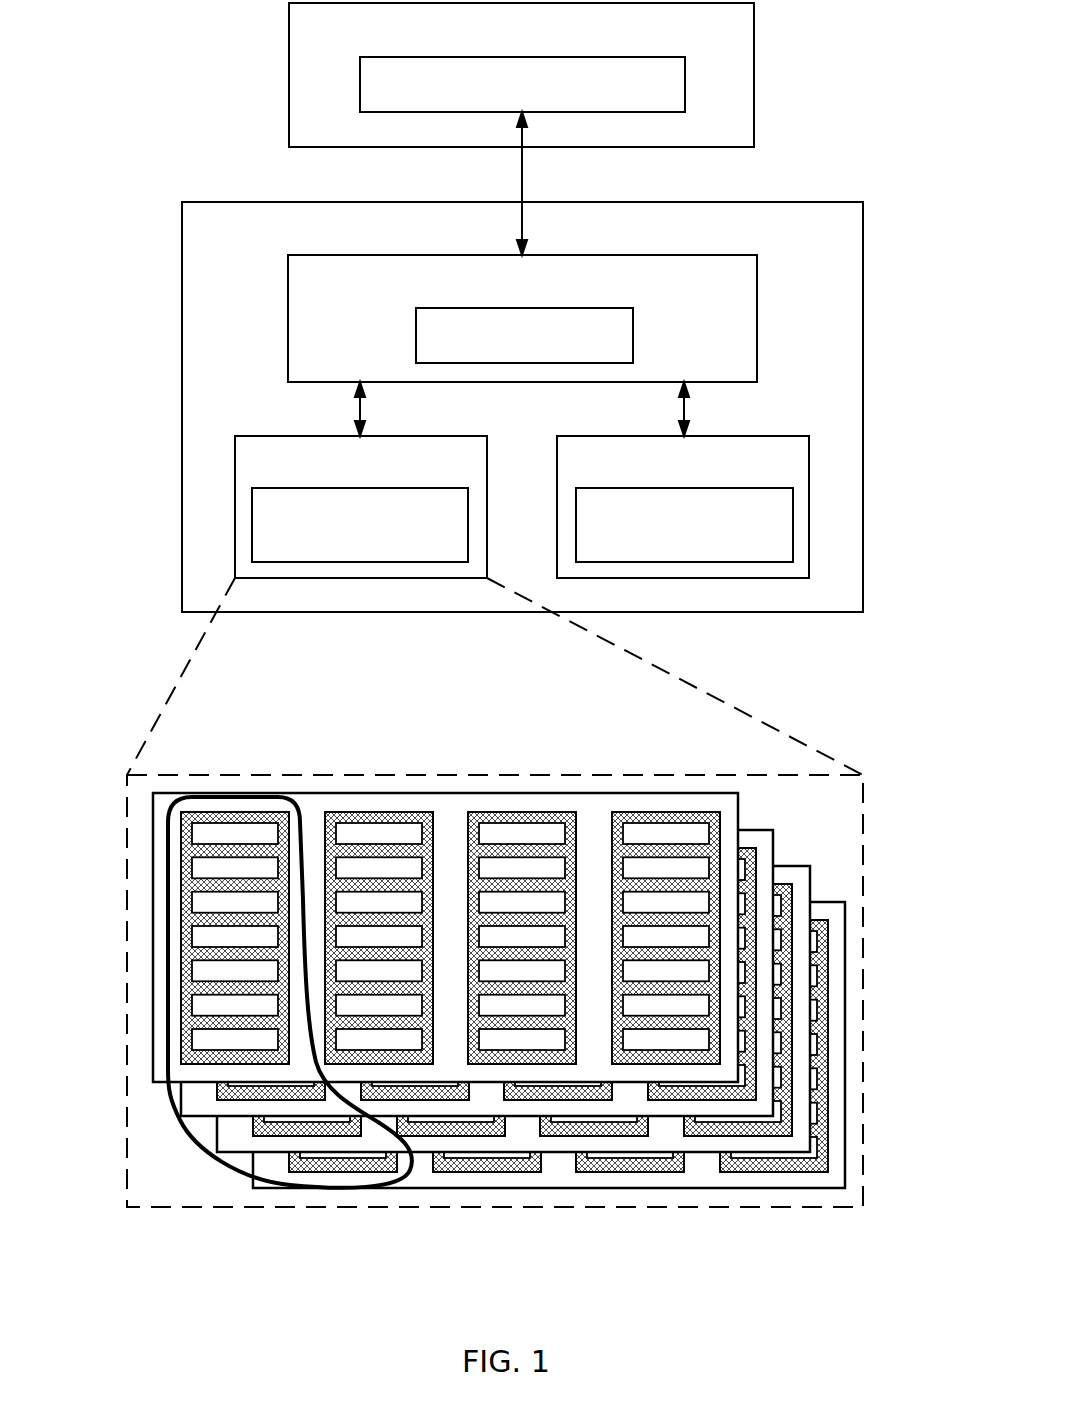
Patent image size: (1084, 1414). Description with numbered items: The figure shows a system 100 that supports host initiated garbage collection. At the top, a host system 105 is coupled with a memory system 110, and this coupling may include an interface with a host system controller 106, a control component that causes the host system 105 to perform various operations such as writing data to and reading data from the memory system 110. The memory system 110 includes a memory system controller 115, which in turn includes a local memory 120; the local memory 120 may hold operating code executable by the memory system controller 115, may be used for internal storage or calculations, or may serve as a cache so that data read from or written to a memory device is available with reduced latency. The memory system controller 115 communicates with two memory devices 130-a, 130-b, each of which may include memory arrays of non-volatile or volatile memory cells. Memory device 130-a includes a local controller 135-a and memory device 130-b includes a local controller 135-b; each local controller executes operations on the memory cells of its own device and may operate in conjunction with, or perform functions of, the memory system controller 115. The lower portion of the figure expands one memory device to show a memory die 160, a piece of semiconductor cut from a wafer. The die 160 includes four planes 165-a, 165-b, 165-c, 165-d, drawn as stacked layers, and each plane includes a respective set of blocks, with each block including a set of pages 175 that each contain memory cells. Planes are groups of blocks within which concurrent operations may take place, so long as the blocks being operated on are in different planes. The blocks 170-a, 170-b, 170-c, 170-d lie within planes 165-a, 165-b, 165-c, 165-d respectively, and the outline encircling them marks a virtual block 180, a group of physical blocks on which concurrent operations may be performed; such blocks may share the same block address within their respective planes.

The system 100 is at (781, 1306).
The host system 105 is at (460, 37).
The host system controller 106 is at (657, 97).
The memory system 110 is at (390, 236).
The memory system controller 115 is at (675, 291).
The local memory 120 is at (617, 347).
The memory device 130-a is at (468, 469).
The memory device 130-b is at (793, 469).
The local controller 135-a is at (387, 549).
The local controller 135-b is at (709, 549).
The memory die 160 is at (127, 812).
The plane 165-a is at (506, 924).
The plane 165-b is at (506, 973).
The plane 165-c is at (506, 1010).
The plane 165-d is at (541, 1062).
The block 170-a is at (170, 938).
The block 170-b is at (217, 1089).
The block 170-c is at (253, 1125).
The block 170-d is at (292, 1160).
The page 175 is at (192, 975).
The virtual block 180 is at (303, 822).